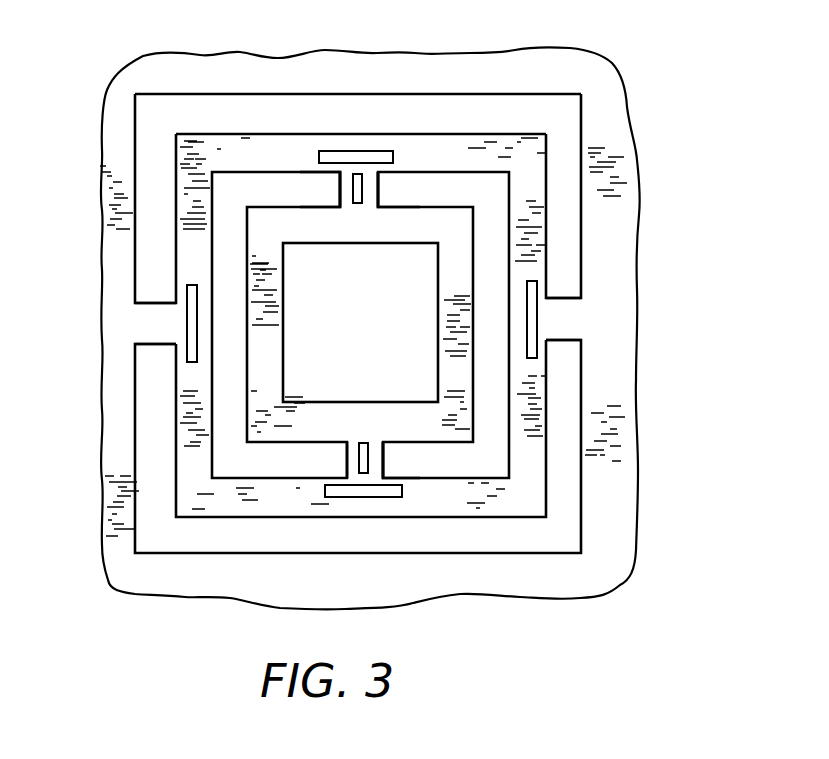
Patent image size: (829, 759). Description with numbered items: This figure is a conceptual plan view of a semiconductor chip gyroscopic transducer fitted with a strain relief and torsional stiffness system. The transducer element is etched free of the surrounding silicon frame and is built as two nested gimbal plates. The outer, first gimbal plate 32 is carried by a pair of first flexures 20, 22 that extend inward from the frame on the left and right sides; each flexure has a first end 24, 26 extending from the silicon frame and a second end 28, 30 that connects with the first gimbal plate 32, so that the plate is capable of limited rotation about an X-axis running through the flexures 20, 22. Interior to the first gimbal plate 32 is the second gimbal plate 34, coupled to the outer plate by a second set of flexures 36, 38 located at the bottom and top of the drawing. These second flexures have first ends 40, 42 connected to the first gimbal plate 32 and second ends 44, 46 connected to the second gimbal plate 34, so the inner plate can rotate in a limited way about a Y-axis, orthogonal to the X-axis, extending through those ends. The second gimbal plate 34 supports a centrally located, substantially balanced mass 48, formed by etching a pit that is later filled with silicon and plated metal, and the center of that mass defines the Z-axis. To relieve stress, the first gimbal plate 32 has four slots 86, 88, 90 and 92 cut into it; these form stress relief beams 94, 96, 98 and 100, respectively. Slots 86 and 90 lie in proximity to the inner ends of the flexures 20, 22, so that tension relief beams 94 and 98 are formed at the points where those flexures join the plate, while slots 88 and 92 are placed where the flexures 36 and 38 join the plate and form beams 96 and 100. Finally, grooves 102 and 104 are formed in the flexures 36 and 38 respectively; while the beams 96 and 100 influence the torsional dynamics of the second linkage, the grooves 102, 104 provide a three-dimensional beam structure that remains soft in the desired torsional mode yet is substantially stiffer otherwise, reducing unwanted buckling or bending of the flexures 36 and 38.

The flexure 20 is at (163, 347).
The flexure 22 is at (565, 345).
The first end of flexure 24 is at (138, 322).
The first end of flexure 26 is at (580, 320).
The second end of flexure 28 is at (178, 322).
The second end of flexure 30 is at (547, 317).
The first gimbal plate 32 is at (497, 132).
The second gimbal plate 34 is at (453, 206).
The second flexure 36 is at (388, 458).
The second flexure 38 is at (383, 193).
The first end of second flexure 40 is at (347, 476).
The first end of second flexure 42 is at (373, 163).
The second end of second flexure 44 is at (349, 440).
The second end of second flexure 46 is at (373, 205).
The substantially balanced mass 48 is at (363, 330).
The slot 86 is at (543, 289).
The slot 88 is at (393, 160).
The slot 90 is at (190, 284).
The slot 92 is at (402, 487).
The stress relief beam 94 is at (543, 290).
The stress relief beam 96 is at (328, 172).
The stress relief beam 98 is at (186, 293).
The stress relief beam 100 is at (398, 478).
The groove 102 is at (364, 440).
The groove 104 is at (353, 203).